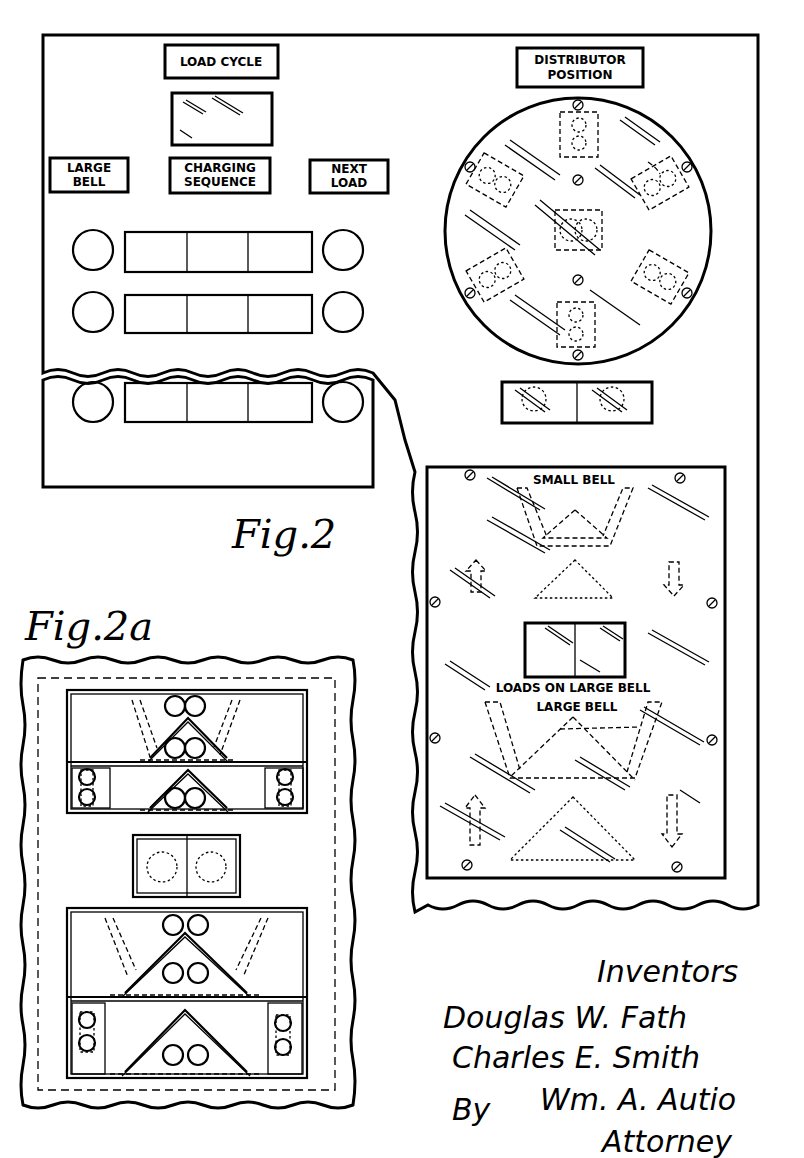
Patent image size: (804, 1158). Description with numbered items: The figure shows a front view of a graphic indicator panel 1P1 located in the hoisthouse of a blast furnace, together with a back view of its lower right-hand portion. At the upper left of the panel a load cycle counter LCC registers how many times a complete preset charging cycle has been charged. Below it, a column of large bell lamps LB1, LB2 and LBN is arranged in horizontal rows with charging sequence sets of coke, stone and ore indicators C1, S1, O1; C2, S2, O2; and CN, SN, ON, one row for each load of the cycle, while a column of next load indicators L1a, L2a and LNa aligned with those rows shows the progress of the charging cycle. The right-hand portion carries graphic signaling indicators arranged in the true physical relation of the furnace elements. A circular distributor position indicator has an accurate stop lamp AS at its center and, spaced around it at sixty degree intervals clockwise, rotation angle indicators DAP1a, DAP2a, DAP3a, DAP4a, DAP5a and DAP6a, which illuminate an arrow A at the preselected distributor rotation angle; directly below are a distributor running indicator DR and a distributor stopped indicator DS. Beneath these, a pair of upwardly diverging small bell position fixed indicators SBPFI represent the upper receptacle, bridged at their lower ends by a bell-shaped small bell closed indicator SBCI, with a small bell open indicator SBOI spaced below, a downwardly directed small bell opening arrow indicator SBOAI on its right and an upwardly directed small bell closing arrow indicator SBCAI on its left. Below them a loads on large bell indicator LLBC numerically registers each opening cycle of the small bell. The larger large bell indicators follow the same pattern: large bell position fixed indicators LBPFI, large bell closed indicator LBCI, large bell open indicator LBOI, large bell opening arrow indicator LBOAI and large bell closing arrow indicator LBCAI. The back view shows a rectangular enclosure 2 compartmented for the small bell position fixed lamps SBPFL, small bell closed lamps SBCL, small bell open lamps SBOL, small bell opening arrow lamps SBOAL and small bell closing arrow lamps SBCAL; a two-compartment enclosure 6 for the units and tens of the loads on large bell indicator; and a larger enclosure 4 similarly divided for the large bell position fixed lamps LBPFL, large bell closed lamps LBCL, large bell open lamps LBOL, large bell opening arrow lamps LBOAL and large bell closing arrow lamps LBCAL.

In FIG. 2, the graphic indicator panel 1P1 is at (338, 45).
In FIG. 2, the load cycle counter LCC is at (172, 118).
In FIG. 2, the large bell lamp LB1 is at (82, 238).
In FIG. 2, the coke indicator C1 is at (136, 233).
In FIG. 2, the stone indicator S1 is at (206, 233).
In FIG. 2, the ore indicator O1 is at (284, 233).
In FIG. 2, the next load indicator L1a is at (350, 243).
In FIG. 2, the large bell lamp LB2 is at (82, 302).
In FIG. 2, the coke indicator C2 is at (154, 296).
In FIG. 2, the stone indicator S2 is at (223, 296).
In FIG. 2, the ore indicator O2 is at (291, 296).
In FIG. 2, the next load indicator L2a is at (351, 307).
In FIG. 2, the large bell lamp LBN is at (84, 420).
In FIG. 2, the coke indicator CN is at (146, 427).
In FIG. 2, the stone indicator SN is at (216, 429).
In FIG. 2, the ore indicator ON is at (293, 429).
In FIG. 2, the next load indicator LNa is at (344, 422).
In FIG. 2, the rotation angle indicator DAP1a is at (599, 118).
In FIG. 2, the rotation angle indicator DAP2a is at (690, 176).
In FIG. 2, the rotation angle indicator DAP3a is at (689, 283).
In FIG. 2, the rotation angle indicator DAP4a is at (604, 345).
In FIG. 2, the rotation angle indicator DAP5a is at (477, 298).
In FIG. 2, the rotation angle indicator DAP6a is at (476, 158).
In FIG. 2, the arrow A is at (648, 162).
In FIG. 2, the accurate stop lamp AS is at (601, 241).
In FIG. 2, the distributor running indicator DR is at (523, 423).
In FIG. 2, the distributor stopped indicator DS is at (623, 423).
In FIG. 2, the small bell position fixed indicators SBPFI is at (613, 500).
In FIG. 2, the small bell closed indicator SBCI is at (596, 553).
In FIG. 2, the small bell open indicator SBOI is at (600, 588).
In FIG. 2, the small bell closing arrow indicator SBCAI is at (486, 574).
In FIG. 2, the small bell opening arrow indicator SBOAI is at (678, 572).
In FIG. 2, the loads on large bell indicator LLBC is at (525, 657).
In FIG. 2A, the loads on large bell indicator LLBC is at (228, 866).
In FIG. 2, the large bell position fixed indicators LBPFI is at (561, 729).
In FIG. 2, the large bell closed indicator LBCI is at (630, 782).
In FIG. 2, the large bell open indicator LBOI is at (546, 815).
In FIG. 2, the large bell closing arrow indicator LBCAI is at (465, 808).
In FIG. 2, the large bell opening arrow indicator LBOAI is at (666, 821).
In FIG. 2A, the small bell position fixed lamps SBPFL is at (186, 697).
In FIG. 2A, the small bell closed lamps SBCL is at (212, 752).
In FIG. 2A, the rectangular enclosure 2 is at (303, 750).
In FIG. 2A, the small bell open lamps SBOL is at (200, 793).
In FIG. 2A, the small bell opening arrow lamps SBOAL is at (90, 806).
In FIG. 2A, the small bell closing arrow lamps SBCAL is at (285, 806).
In FIG. 2A, the rectangular enclosure 6 is at (207, 866).
In FIG. 2A, the large bell position fixed lamps LBPFL is at (173, 915).
In FIG. 2A, the large bell closed lamps LBCL is at (204, 968).
In FIG. 2A, the enclosure 4 is at (303, 973).
In FIG. 2A, the large bell opening arrow lamps LBOAL is at (95, 1043).
In FIG. 2A, the large bell open lamps LBOL is at (202, 1047).
In FIG. 2A, the large bell closing arrow lamps LBCAL is at (276, 1051).